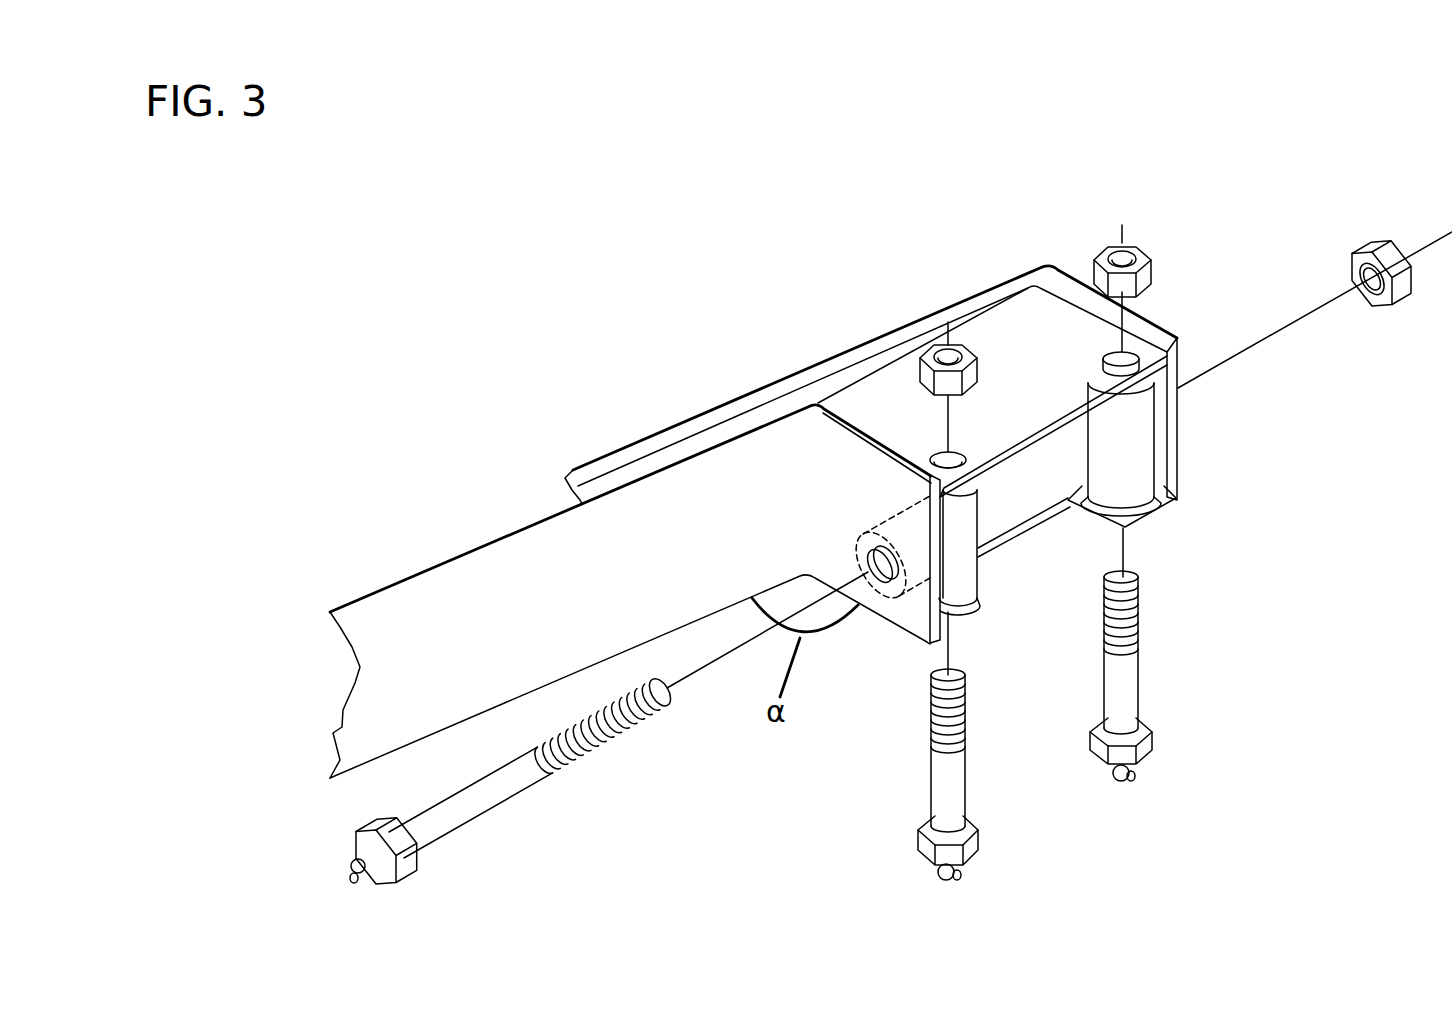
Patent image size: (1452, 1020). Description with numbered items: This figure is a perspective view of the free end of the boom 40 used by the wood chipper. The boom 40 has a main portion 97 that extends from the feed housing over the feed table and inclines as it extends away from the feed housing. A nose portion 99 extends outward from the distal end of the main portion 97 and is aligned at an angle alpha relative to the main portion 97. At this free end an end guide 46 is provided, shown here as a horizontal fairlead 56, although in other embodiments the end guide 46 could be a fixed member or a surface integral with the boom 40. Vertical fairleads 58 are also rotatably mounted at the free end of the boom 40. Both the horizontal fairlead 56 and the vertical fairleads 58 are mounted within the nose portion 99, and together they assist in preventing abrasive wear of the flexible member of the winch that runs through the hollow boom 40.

The boom 40 is at (808, 376).
The main portion 97 is at (527, 577).
The end guide 46 is at (998, 520).
The horizontal fairlead 56 is at (1035, 478).
The vertical fairleads 58 is at (1135, 466).
The nose portion 99 is at (920, 630).